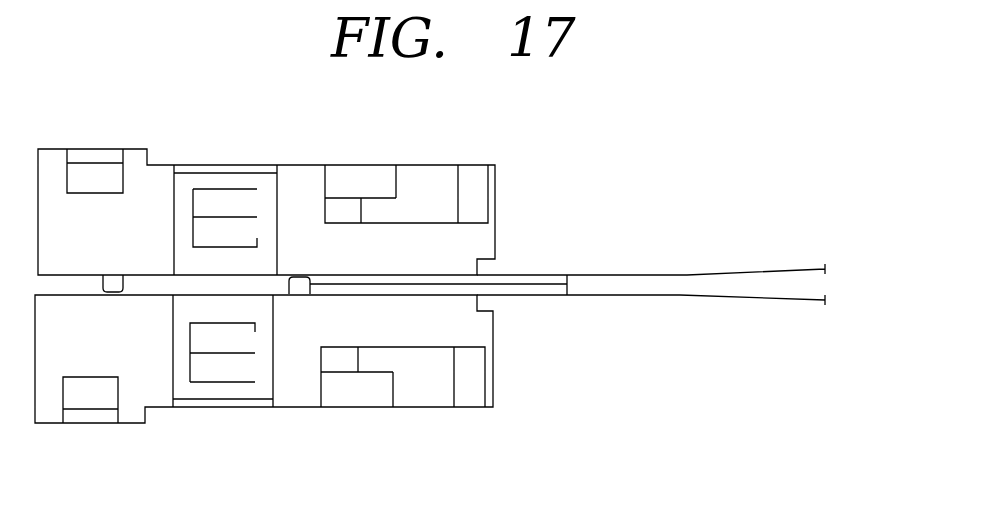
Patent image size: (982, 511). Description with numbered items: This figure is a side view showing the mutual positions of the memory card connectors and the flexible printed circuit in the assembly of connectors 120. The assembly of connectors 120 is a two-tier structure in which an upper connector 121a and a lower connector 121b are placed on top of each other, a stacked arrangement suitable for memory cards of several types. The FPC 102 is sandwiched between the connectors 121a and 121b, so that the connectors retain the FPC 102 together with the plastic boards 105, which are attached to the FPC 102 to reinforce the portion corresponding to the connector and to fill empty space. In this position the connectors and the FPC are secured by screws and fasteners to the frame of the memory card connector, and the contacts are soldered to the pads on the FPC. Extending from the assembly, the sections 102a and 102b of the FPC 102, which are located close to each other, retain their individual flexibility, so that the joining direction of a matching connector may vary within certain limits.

The assembly of connectors 120 is at (255, 107).
The connector 121a is at (442, 126).
The connector 121b is at (477, 417).
The FPC 102 is at (649, 208).
The section of the FPC 102a is at (812, 248).
The section of the FPC 102b is at (737, 352).
The plastic board 105 is at (566, 295).